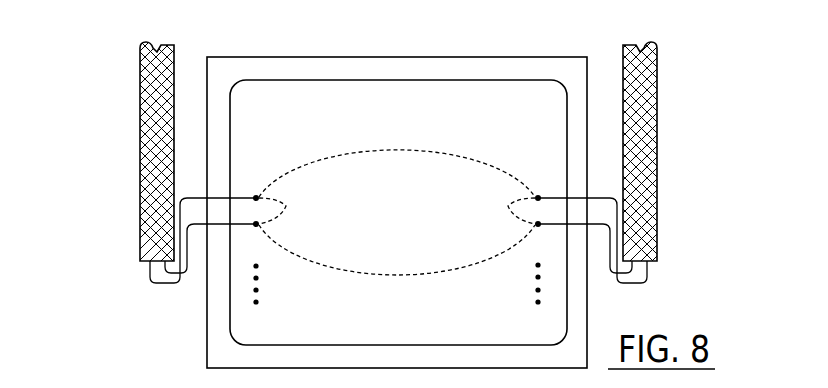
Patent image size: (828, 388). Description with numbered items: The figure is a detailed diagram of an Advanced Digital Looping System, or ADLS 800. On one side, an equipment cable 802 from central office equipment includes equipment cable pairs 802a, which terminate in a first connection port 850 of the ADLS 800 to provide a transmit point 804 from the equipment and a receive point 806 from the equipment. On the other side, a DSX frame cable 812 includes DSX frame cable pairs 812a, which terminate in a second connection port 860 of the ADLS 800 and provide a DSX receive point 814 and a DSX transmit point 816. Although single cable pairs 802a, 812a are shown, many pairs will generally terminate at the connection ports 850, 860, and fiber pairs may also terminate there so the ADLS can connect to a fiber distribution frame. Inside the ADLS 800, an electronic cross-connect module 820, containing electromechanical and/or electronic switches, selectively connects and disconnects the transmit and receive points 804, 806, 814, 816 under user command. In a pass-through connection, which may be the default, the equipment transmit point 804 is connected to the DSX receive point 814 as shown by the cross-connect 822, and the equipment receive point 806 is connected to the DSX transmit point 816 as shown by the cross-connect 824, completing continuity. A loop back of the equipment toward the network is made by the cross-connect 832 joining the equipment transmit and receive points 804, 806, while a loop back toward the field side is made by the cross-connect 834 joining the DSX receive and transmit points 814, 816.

The Advanced Digital Looping System 800 is at (338, 57).
The equipment cable 802 is at (140, 105).
The equipment cable pairs 802a is at (168, 284).
The transmit point 804 is at (256, 196).
The receive point 806 is at (256, 226).
The DSX frame cable 812 is at (657, 105).
The DSX frame cable pairs 812a is at (627, 285).
The DSX receive point 814 is at (538, 196).
The DSX transmit point 816 is at (538, 226).
The electronic cross-connect module 820 is at (353, 82).
The pass-through connection 822 is at (398, 147).
The pass-through connection 824 is at (415, 280).
The equipment loop back cross-connect 832 is at (289, 204).
The DSX loop back cross-connect 834 is at (505, 204).
The first connection port 850 is at (262, 310).
The second connection port 860 is at (534, 309).